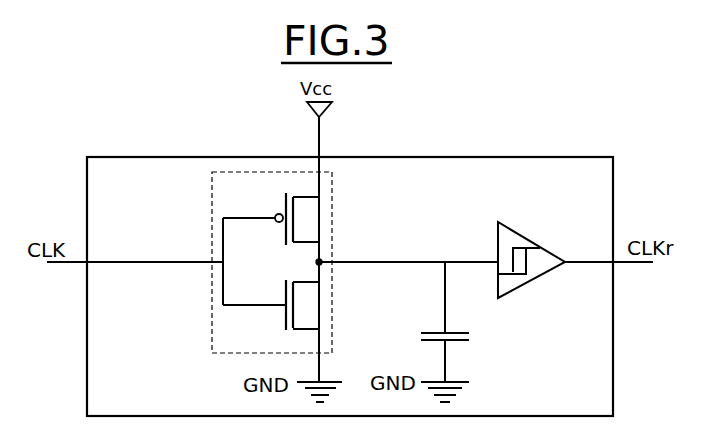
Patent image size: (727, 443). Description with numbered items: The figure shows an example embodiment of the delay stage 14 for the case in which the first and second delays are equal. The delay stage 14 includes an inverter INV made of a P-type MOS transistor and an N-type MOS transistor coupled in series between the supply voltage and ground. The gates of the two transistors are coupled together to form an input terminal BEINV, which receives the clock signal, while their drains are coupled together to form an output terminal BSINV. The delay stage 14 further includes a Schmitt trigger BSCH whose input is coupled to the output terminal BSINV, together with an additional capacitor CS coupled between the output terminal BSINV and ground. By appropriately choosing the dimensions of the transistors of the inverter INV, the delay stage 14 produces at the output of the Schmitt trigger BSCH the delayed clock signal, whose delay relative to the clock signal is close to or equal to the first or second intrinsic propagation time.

The delay stage 14 is at (86, 308).
The inverter INV is at (333, 197).
The input terminal BEINV is at (219, 254).
The output terminal BSINV is at (322, 260).
The additional capacitor CS is at (431, 328).
The Schmitt trigger BSCH is at (535, 242).